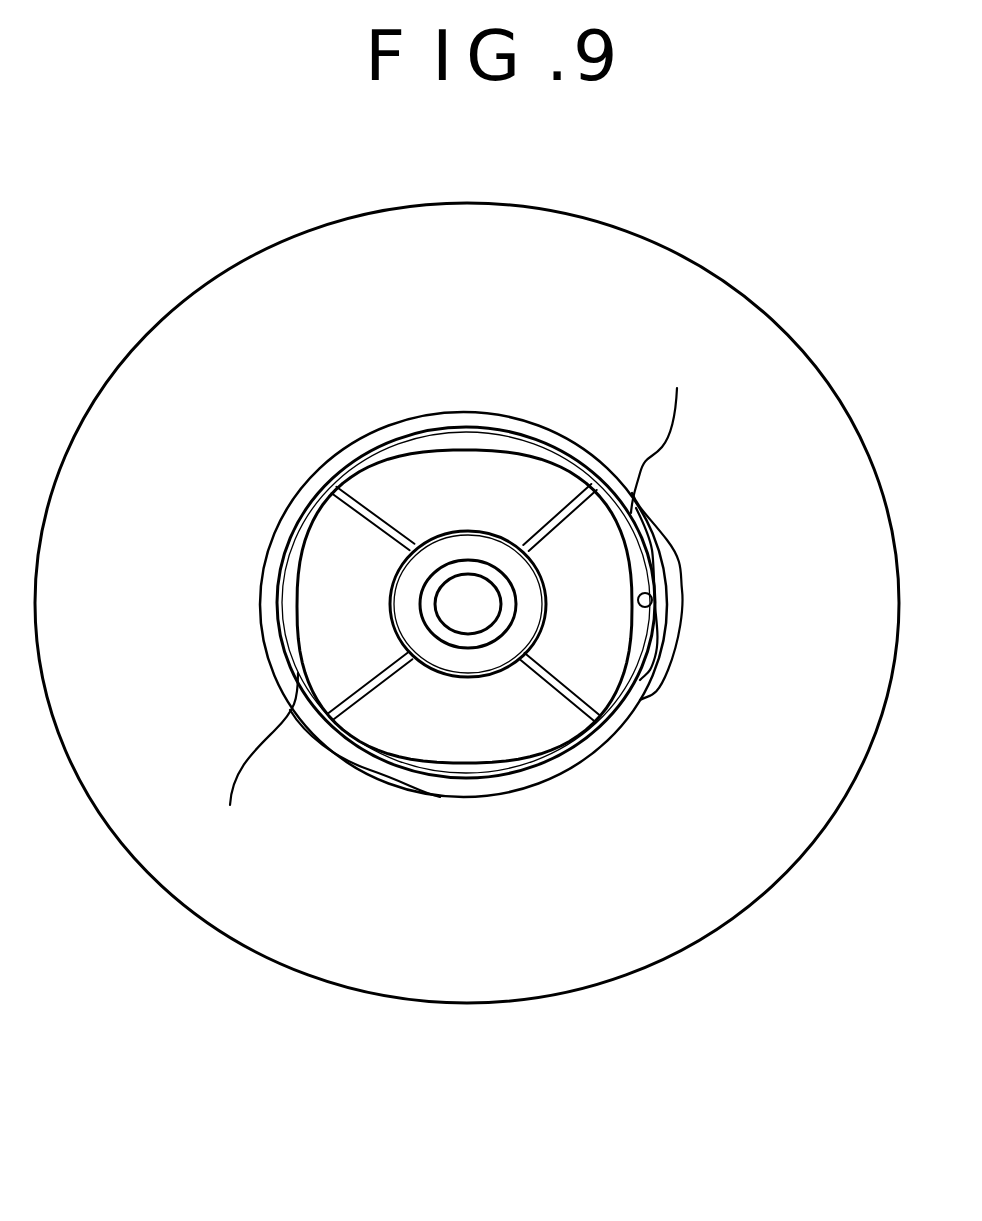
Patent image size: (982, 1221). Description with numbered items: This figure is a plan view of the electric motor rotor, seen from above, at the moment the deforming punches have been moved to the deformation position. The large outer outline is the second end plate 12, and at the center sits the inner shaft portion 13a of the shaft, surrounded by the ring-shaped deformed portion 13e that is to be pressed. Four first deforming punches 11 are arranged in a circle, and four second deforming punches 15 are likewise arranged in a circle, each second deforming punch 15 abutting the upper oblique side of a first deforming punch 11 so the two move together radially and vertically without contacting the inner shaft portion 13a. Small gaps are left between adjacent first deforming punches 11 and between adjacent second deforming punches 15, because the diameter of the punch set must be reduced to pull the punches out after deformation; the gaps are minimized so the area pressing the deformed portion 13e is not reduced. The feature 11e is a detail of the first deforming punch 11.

The first deforming punch 11 is at (510, 440).
The engagement projection 11e is at (652, 598).
The second end plate 12 is at (778, 402).
The inner shaft portion 13a is at (458, 636).
The deformed portion 13e is at (610, 728).
The second deforming punch 15 is at (413, 489).